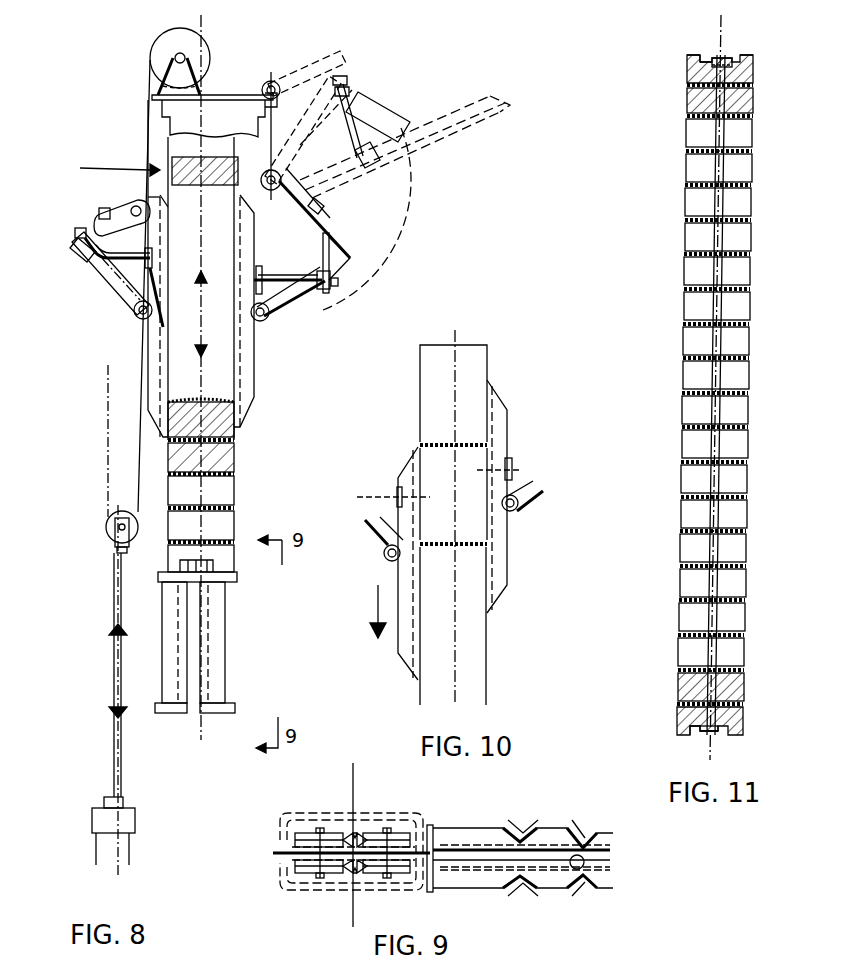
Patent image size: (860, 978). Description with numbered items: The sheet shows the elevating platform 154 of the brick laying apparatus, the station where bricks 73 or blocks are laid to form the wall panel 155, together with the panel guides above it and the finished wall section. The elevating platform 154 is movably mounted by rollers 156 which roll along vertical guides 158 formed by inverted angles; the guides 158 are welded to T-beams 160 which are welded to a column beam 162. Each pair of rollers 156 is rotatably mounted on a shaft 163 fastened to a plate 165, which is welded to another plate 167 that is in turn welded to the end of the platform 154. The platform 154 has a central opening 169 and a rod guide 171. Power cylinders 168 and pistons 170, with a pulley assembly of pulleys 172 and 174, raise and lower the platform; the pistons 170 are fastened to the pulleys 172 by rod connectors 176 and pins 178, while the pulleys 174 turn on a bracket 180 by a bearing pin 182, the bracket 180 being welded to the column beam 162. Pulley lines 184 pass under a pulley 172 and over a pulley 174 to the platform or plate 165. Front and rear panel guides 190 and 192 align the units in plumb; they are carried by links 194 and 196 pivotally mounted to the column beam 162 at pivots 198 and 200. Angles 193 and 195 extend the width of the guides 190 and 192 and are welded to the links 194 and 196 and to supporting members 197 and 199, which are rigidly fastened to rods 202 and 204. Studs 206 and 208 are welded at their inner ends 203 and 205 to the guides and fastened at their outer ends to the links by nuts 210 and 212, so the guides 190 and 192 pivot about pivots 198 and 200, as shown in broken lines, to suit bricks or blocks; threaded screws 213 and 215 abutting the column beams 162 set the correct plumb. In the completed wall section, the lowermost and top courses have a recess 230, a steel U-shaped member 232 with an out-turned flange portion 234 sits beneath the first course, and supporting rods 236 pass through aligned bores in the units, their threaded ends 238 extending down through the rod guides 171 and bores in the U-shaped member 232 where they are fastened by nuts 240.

In FIG. 8, the bricks 73 is at (173, 160).
In FIG. 8, the elevating platform 154 is at (218, 612).
In FIG. 9, the elevating platform 154 is at (460, 888).
In FIG. 8, the wall panel 155 is at (235, 460).
In FIG. 11, the wall panel 155 is at (683, 342).
In FIG. 9, the rollers 156 is at (330, 833).
In FIG. 9, the vertical guides 158 is at (362, 838).
In FIG. 9, the T-beams 160 is at (360, 833).
In FIG. 8, the column beam 162 is at (277, 90).
In FIG. 9, the column beam 162 is at (300, 812).
In FIG. 9, the shaft 163 is at (388, 878).
In FIG. 9, the plate 165 is at (285, 853).
In FIG. 9, the plate 167 is at (433, 828).
In FIG. 8, the power cylinders 168 is at (121, 842).
In FIG. 9, the central opening 169 is at (540, 858).
In FIG. 8, the pistons 170 is at (113, 740).
In FIG. 9, the rod guide 171 is at (584, 862).
In FIG. 8, the pulleys 172 is at (106, 527).
In FIG. 8, the pulleys 174 is at (198, 47).
In FIG. 8, the rod connectors 176 is at (114, 548).
In FIG. 8, the pins 178 is at (119, 523).
In FIG. 8, the bracket 180 is at (175, 72).
In FIG. 8, the bearing pin 182 is at (186, 58).
In FIG. 8, the pulley lines 184 is at (107, 442).
In FIG. 8, the front panel guide 190 is at (250, 352).
In FIG. 10, the front panel guide 190 is at (497, 543).
In FIG. 8, the rear panel guide 192 is at (158, 355).
In FIG. 10, the rear panel guide 192 is at (412, 643).
In FIG. 8, the angle 193 is at (348, 251).
In FIG. 8, the link 194 is at (346, 232).
In FIG. 8, the angle 195 is at (74, 252).
In FIG. 8, the link 196 is at (150, 212).
In FIG. 8, the supporting member 197 is at (296, 300).
In FIG. 8, the pivot 198 is at (283, 95).
In FIG. 8, the supporting member 199 is at (110, 273).
In FIG. 8, the pivot 200 is at (135, 203).
In FIG. 8, the rod 202 is at (266, 314).
In FIG. 10, the rod 202 is at (504, 506).
In FIG. 8, the inner end 203 is at (249, 266).
In FIG. 8, the rod 204 is at (133, 312).
In FIG. 10, the rod 204 is at (384, 553).
In FIG. 8, the inner end 205 is at (165, 276).
In FIG. 8, the stud 206 is at (268, 277).
In FIG. 8, the stud 208 is at (152, 256).
In FIG. 8, the nut 210 is at (336, 284).
In FIG. 8, the nut 212 is at (80, 231).
In FIG. 8, the threaded screw 213 is at (322, 208).
In FIG. 8, the threaded screw 215 is at (100, 212).
In FIG. 11, the recess 230 is at (753, 72).
In FIG. 11, the U-shaped member 232 is at (708, 53).
In FIG. 11, the out-turned flange portion 234 is at (695, 54).
In FIG. 11, the supporting rods 236 is at (718, 375).
In FIG. 11, the threaded ends 238 is at (709, 733).
In FIG. 11, the nuts 240 is at (723, 58).